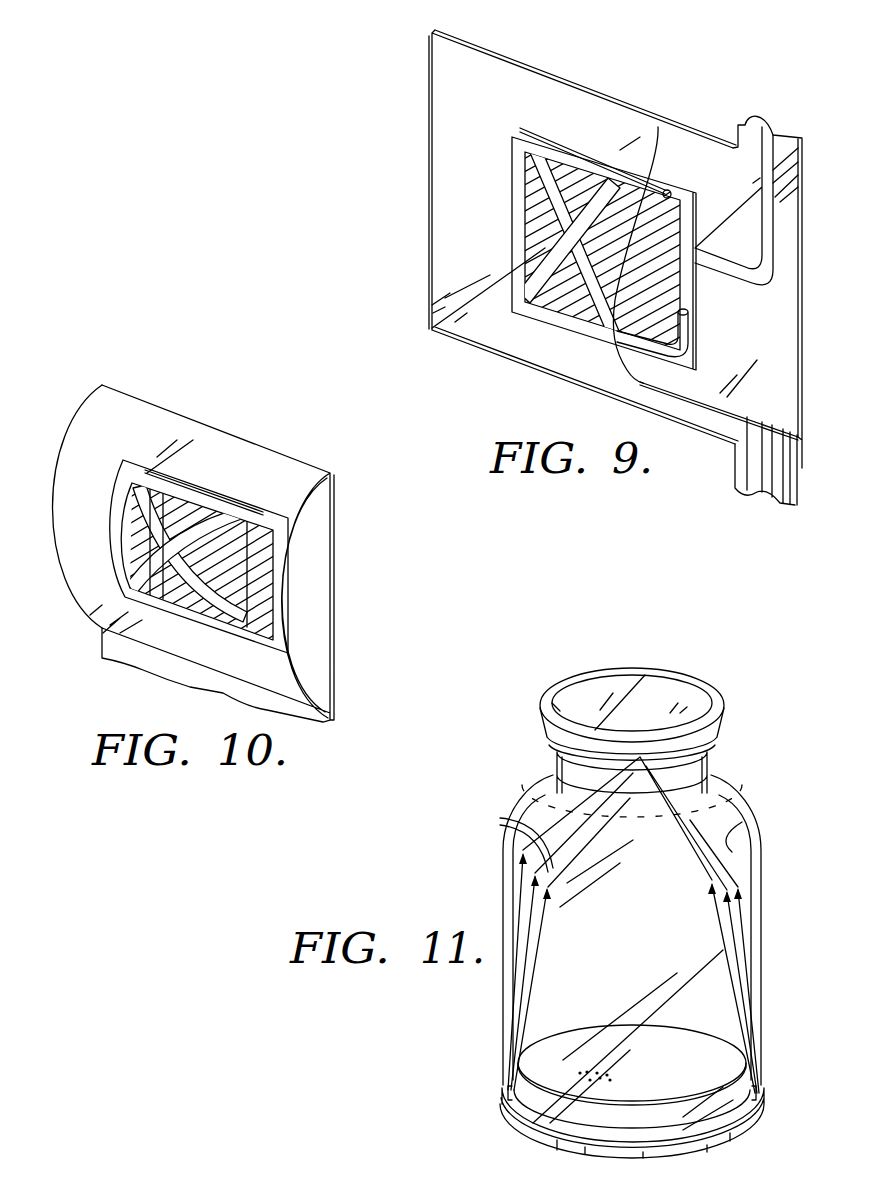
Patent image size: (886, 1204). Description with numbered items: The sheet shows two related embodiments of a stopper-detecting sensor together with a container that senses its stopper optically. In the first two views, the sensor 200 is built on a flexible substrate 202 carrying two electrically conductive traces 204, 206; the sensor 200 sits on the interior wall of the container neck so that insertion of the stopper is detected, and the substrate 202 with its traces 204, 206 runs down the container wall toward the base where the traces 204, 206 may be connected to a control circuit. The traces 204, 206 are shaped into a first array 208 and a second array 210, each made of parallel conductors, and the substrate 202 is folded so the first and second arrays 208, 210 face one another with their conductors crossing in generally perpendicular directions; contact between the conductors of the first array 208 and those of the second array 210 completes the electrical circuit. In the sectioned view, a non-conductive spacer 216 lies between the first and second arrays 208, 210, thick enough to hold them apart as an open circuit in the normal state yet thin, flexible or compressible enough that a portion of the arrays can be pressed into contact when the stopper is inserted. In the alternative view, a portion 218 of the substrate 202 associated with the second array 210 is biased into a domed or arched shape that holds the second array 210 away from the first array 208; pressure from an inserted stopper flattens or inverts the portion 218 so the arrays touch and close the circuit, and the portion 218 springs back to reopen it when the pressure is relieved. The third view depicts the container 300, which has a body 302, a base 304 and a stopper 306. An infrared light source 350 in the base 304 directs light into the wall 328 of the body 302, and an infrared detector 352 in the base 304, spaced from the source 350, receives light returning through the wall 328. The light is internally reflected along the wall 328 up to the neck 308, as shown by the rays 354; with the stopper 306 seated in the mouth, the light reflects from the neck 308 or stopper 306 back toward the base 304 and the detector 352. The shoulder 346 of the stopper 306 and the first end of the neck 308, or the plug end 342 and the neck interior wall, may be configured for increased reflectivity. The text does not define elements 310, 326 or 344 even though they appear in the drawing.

In FIG. 9, the sensor 200 is at (378, 116).
In FIG. 10, the sensor 200 is at (265, 409).
In FIG. 9, the flexible substrate 202 is at (520, 92).
In FIG. 10, the flexible substrate 202 is at (292, 468).
In FIG. 9, the electrically conductive trace 204 is at (748, 490).
In FIG. 9, the electrically conductive trace 206 is at (770, 124).
In FIG. 9, the first array 208 is at (527, 317).
In FIG. 10, the first array 208 is at (291, 592).
In FIG. 9, the second array 210 is at (700, 352).
In FIG. 10, the second array 210 is at (117, 537).
In FIG. 9, the spacer 216 is at (666, 189).
In FIG. 10, the portion of the substrate 218 is at (72, 473).
In FIG. 11, the container 300 is at (464, 1018).
In FIG. 11, the body 302 is at (762, 893).
In FIG. 11, the base 304 is at (712, 1148).
In FIG. 11, the stopper 306 is at (703, 672).
In FIG. 11, the neck 308 is at (712, 768).
In FIG. 11, the strap 310 is at (760, 948).
In FIG. 11, the hook 326 is at (744, 822).
In FIG. 11, the wall 328 is at (762, 853).
In FIG. 11, the plug end 342 is at (553, 774).
In FIG. 11, the cap rim 344 is at (545, 706).
In FIG. 11, the shoulder 346 is at (549, 743).
In FIG. 11, the infrared light source 350 is at (500, 1097).
In FIG. 11, the infrared light detector 352 is at (762, 1094).
In FIG. 11, the rays 354 is at (512, 825).